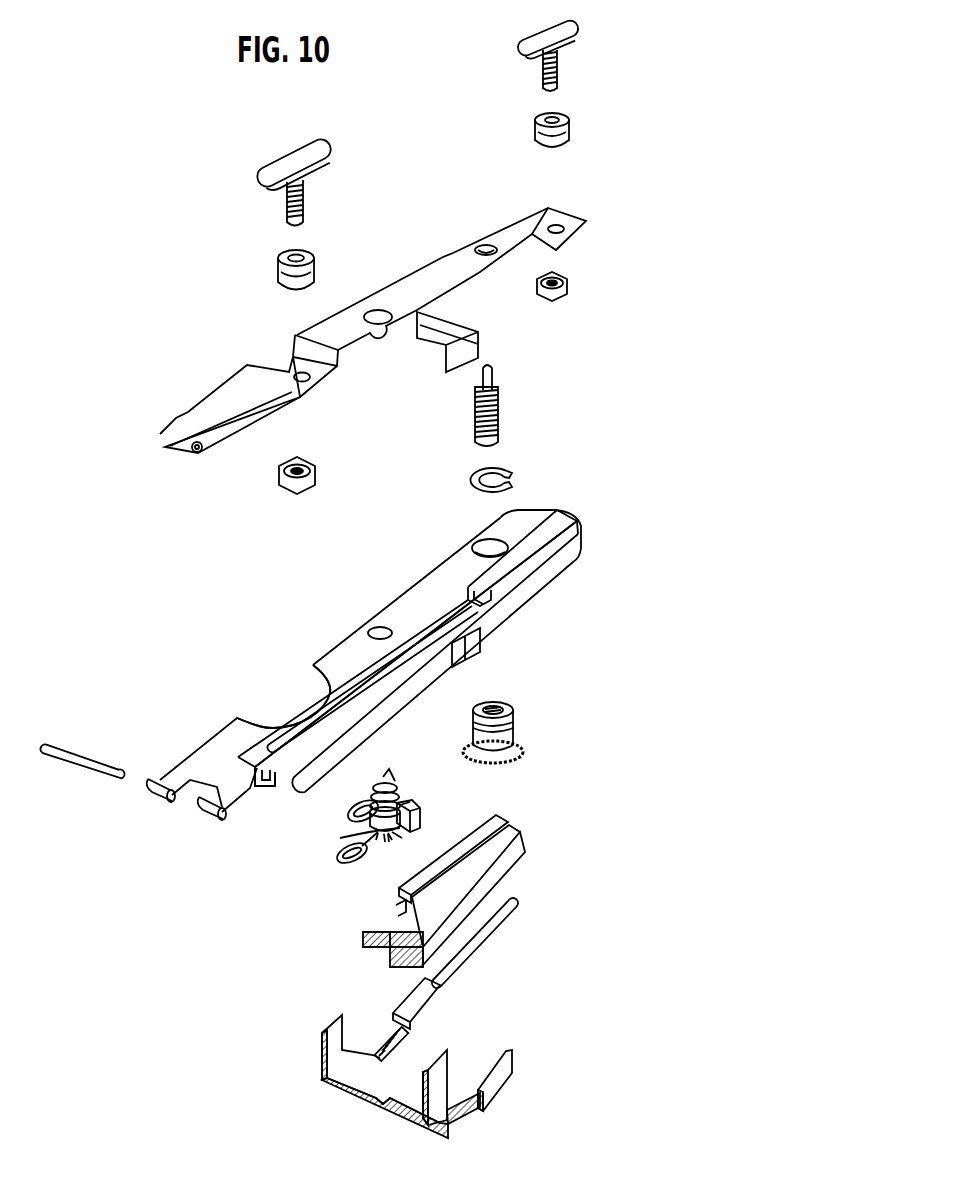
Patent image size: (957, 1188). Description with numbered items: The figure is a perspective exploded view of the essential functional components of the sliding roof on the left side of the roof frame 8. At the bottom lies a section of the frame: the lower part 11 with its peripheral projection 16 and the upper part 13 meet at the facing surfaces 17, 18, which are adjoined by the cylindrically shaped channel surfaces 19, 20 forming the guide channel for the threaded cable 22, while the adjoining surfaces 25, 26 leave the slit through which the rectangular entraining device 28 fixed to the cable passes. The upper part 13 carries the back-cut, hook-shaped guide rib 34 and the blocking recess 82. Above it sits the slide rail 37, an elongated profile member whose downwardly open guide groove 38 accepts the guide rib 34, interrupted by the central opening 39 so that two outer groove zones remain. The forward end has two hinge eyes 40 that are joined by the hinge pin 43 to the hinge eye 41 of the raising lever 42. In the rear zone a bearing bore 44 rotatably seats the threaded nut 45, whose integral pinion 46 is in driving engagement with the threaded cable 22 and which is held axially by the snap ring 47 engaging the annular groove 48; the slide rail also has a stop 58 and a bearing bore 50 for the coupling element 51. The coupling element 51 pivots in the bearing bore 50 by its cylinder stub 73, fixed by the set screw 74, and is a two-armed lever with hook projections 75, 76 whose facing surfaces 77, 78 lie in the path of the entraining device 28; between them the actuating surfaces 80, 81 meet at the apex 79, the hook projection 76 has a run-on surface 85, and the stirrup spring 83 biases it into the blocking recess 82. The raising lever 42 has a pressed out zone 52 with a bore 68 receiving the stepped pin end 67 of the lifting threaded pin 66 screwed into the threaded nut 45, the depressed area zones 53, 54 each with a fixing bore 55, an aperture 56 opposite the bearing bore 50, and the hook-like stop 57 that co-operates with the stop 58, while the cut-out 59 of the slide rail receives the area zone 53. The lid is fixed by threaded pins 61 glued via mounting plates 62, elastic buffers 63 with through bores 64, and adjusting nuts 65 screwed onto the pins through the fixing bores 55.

The roof frame 8 is at (342, 945).
The lower part 11 is at (345, 1095).
The upper part 13 is at (505, 860).
The peripheral projection 16 is at (445, 1068).
The surface 17 is at (425, 1070).
The surface 18 is at (403, 962).
The channel surface 19 is at (400, 1072).
The channel surface 20 is at (388, 940).
The threaded cable 22 is at (470, 962).
The surface 25 is at (365, 1083).
The surface 26 is at (365, 942).
The entraining device 28 is at (400, 1008).
The guide rib 34 is at (490, 825).
The slide rail 37 is at (193, 746).
The guide groove 38 is at (470, 600).
The central opening 39 is at (398, 672).
The hinge eyes 40 is at (198, 808).
The hinge eye 41 is at (168, 443).
The raising lever 42 is at (205, 392).
The hinge pin 43 is at (74, 770).
The bearing bore 44 is at (485, 548).
The threaded nut 45 is at (512, 735).
The pinion 46 is at (473, 752).
The snap ring 47 is at (506, 475).
The annular groove 48 is at (488, 765).
The bearing bore 50 is at (378, 630).
The coupling element 51 is at (343, 838).
The pressed out zone 52 is at (497, 231).
The area zone 53 is at (320, 382).
The area zone 54 is at (575, 223).
The fixing bore 55 is at (556, 227).
The aperture 56 is at (378, 313).
The stop 57 is at (445, 372).
The stop 58 is at (462, 655).
The cut-out 59 is at (273, 727).
The threaded pin 61 is at (560, 68).
The mounting plate 62 is at (574, 25).
The buffer 63 is at (568, 135).
The through bore 64 is at (551, 118).
The adjusting nut 65 is at (568, 287).
The threaded pin 66 is at (498, 412).
The pin end 67 is at (492, 370).
The bore 68 is at (487, 253).
The cylinder stub 73 is at (380, 822).
The set screw 74 is at (386, 782).
The hook projection 75 is at (345, 858).
The hook projection 76 is at (405, 803).
The surface 77 is at (378, 833).
The surface 78 is at (400, 832).
The apex 79 is at (387, 835).
The actuating surface 80 is at (385, 834).
The actuating surface 81 is at (392, 832).
The blocking recess 82 is at (398, 905).
The stirrup spring 83 is at (356, 805).
The run-on surface 85 is at (420, 822).